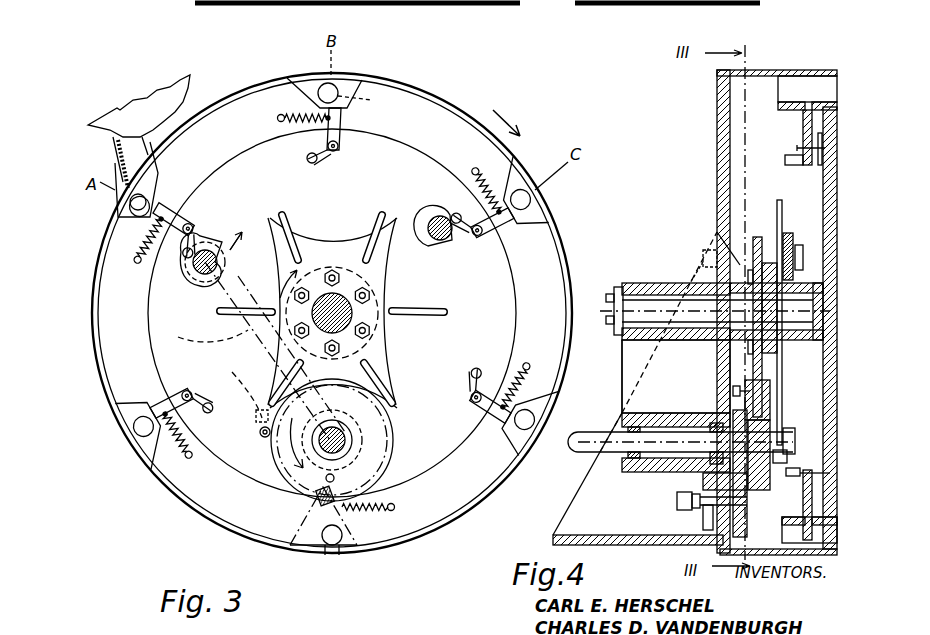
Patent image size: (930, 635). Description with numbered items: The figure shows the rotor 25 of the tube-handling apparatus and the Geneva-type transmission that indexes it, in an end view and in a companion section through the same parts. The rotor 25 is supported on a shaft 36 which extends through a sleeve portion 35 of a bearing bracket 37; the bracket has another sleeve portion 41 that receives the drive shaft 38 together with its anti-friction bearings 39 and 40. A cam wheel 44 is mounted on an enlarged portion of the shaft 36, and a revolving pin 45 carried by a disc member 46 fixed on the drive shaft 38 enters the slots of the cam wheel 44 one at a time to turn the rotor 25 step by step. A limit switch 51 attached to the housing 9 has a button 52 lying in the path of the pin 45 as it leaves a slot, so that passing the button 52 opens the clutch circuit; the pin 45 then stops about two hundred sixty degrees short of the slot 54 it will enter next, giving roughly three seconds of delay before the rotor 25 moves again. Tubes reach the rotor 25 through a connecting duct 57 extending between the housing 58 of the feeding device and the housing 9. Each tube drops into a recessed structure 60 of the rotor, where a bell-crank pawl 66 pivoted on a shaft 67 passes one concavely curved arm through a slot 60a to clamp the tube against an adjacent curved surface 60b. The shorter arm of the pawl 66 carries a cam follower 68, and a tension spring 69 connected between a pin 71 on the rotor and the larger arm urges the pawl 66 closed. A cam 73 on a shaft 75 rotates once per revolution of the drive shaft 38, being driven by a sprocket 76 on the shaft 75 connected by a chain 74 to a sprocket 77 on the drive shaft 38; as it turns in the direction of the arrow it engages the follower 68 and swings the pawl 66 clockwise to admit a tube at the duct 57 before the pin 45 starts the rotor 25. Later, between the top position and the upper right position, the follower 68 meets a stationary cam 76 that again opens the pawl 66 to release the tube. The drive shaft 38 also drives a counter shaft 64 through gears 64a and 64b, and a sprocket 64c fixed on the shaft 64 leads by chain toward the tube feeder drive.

In FIG. 3, the housing 9 is at (456, 96).
In FIG. 4, the housing 9 is at (717, 122).
In FIG. 3, the rotor 25 is at (218, 514).
In FIG. 4, the rotor 25 is at (837, 185).
In FIG. 4, the sleeve portion 35 is at (658, 283).
In FIG. 3, the shaft 36 is at (333, 300).
In FIG. 4, the shaft 36 is at (633, 283).
In FIG. 4, the bearing bracket 37 is at (700, 250).
In FIG. 3, the drive shaft 38 is at (346, 446).
In FIG. 4, the drive shaft 38 is at (596, 436).
In FIG. 4, the anti-friction bearing 39 is at (634, 420).
In FIG. 4, the anti-friction bearing 40 is at (668, 415).
In FIG. 4, the sleeve portion 41 is at (640, 395).
In FIG. 3, the cam wheel 44 is at (396, 296).
In FIG. 4, the cam wheel 44 is at (760, 232).
In FIG. 3, the revolving pin 45 is at (260, 436).
In FIG. 3, the disc member 46 is at (390, 466).
In FIG. 4, the disc member 46 is at (770, 414).
In FIG. 3, the limit switch 51 is at (244, 390).
In FIG. 4, the limit switch 51 is at (733, 389).
In FIG. 3, the button 52 is at (256, 410).
In FIG. 3, the slot 54 is at (386, 388).
In FIG. 3, the connecting duct 57 is at (118, 162).
In FIG. 3, the housing 58 is at (186, 80).
In FIG. 3, the recessed structure 60 is at (300, 78).
In FIG. 4, the recessed structure 60 is at (782, 537).
In FIG. 3, the slot 60a is at (373, 100).
In FIG. 4, the slot 60a is at (806, 95).
In FIG. 3, the surface 60b is at (340, 78).
In FIG. 3, the counter shaft 64 is at (320, 496).
In FIG. 4, the counter shaft 64 is at (677, 500).
In FIG. 4, the gear 64a is at (760, 460).
In FIG. 4, the gear 64b is at (733, 535).
In FIG. 4, the sprocket 64c is at (705, 512).
In FIG. 3, the pawl 66 is at (343, 122).
In FIG. 4, the pawl 66 is at (825, 92).
In FIG. 3, the shaft 67 is at (339, 150).
In FIG. 4, the shaft 67 is at (797, 148).
In FIG. 3, the cam follower 68 is at (306, 158).
In FIG. 4, the cam follower 68 is at (785, 160).
In FIG. 3, the tension spring 69 is at (292, 114).
In FIG. 3, the pin 71 is at (277, 118).
In FIG. 3, the cam 73 is at (242, 236).
In FIG. 4, the cam 73 is at (803, 250).
In FIG. 3, the chain 74 is at (222, 339).
In FIG. 4, the chain 74 is at (782, 372).
In FIG. 3, the shaft 75 is at (222, 270).
In FIG. 4, the shaft 75 is at (717, 232).
In FIG. 3, the sprocket 76 is at (428, 232).
In FIG. 4, the sprocket 76 is at (788, 234).
In FIG. 4, the sprocket 77 is at (788, 458).